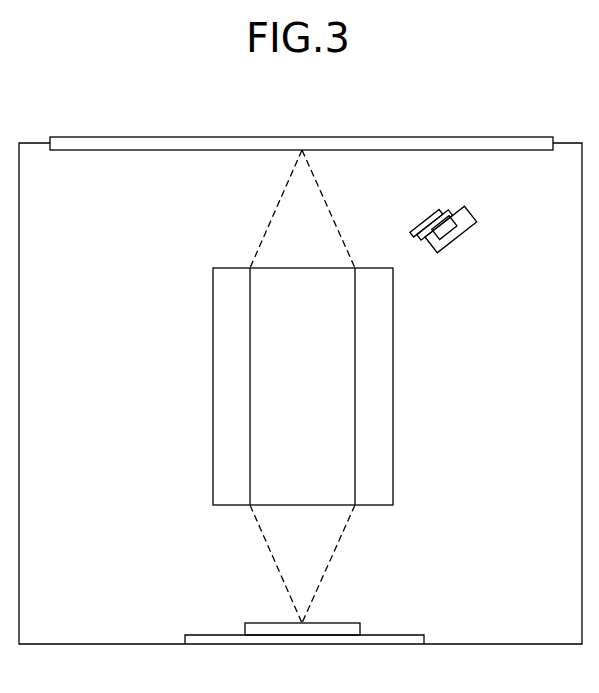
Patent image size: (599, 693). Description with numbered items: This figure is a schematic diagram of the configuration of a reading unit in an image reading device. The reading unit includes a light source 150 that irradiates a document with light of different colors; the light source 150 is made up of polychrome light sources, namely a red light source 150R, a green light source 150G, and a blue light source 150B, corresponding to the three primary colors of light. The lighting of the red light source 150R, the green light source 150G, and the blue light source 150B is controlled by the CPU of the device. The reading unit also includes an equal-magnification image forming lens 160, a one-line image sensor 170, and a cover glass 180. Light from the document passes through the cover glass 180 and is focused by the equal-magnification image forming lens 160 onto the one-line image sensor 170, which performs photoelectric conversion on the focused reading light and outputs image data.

The light source 150 is at (436, 200).
The red light source 150R is at (417, 230).
The green light source 150G is at (425, 222).
The blue light source 150B is at (458, 212).
The equal-magnification image forming lens 160 is at (213, 490).
The one-line image sensor 170 is at (342, 623).
The cover glass 180 is at (513, 137).